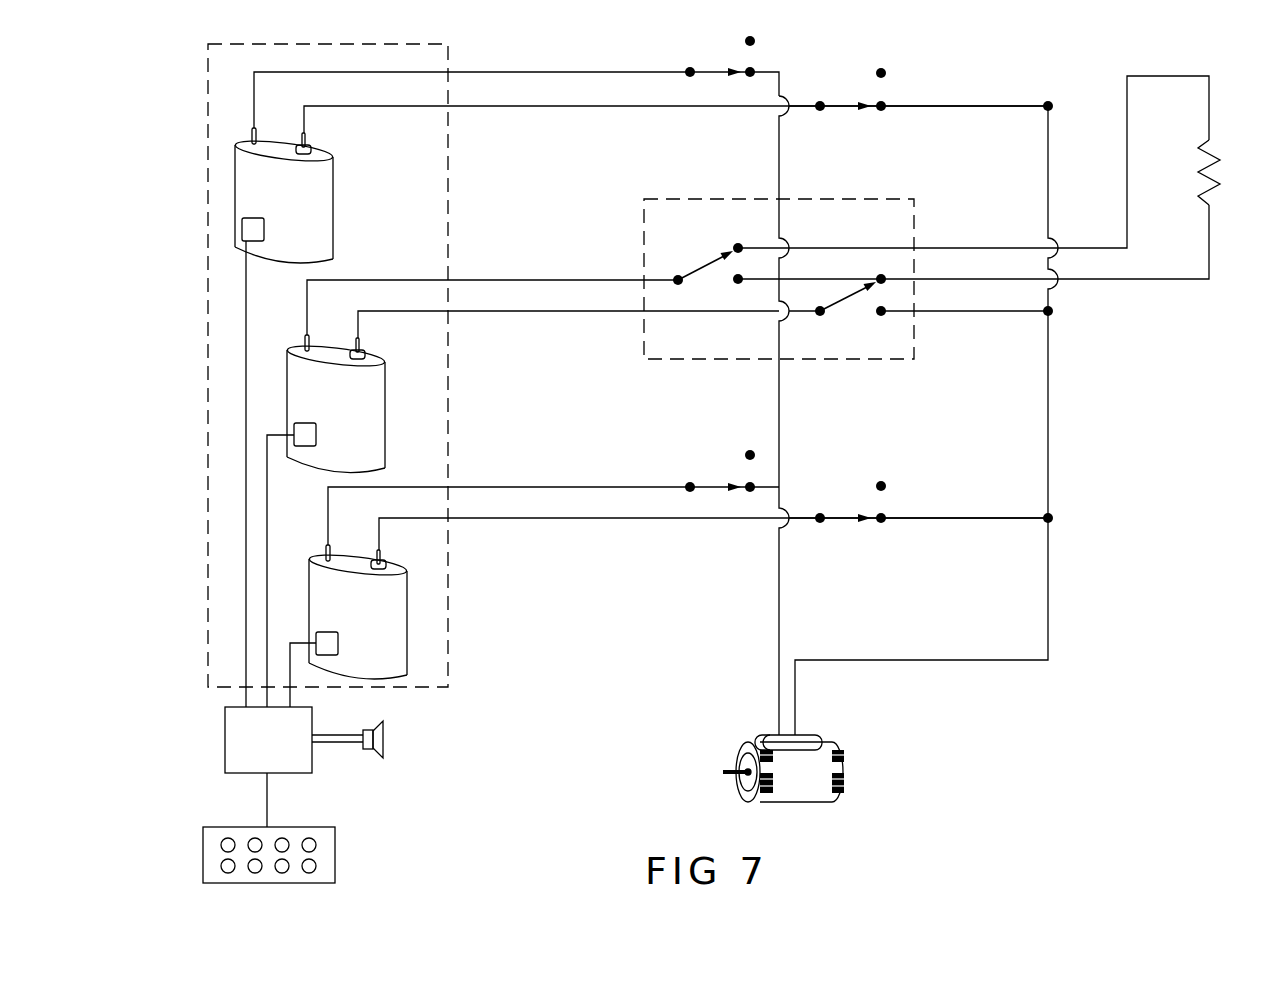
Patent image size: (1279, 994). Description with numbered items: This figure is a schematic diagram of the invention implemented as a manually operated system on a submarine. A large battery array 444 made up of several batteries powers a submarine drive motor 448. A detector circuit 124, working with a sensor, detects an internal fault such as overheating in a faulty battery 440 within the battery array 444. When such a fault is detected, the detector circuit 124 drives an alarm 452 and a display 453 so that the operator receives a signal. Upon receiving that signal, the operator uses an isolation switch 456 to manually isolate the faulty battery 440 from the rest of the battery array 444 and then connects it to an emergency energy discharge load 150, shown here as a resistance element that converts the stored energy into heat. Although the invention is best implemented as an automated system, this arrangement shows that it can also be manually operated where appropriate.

The detector circuit 124 is at (225, 741).
The emergency energy discharge load 150 is at (1229, 172).
The faulty battery 440 is at (385, 410).
The battery array 444 is at (306, 375).
The submarine drive motor 448 is at (846, 773).
The alarm 452 is at (368, 750).
The display 453 is at (203, 856).
The isolation switch 456 is at (893, 360).